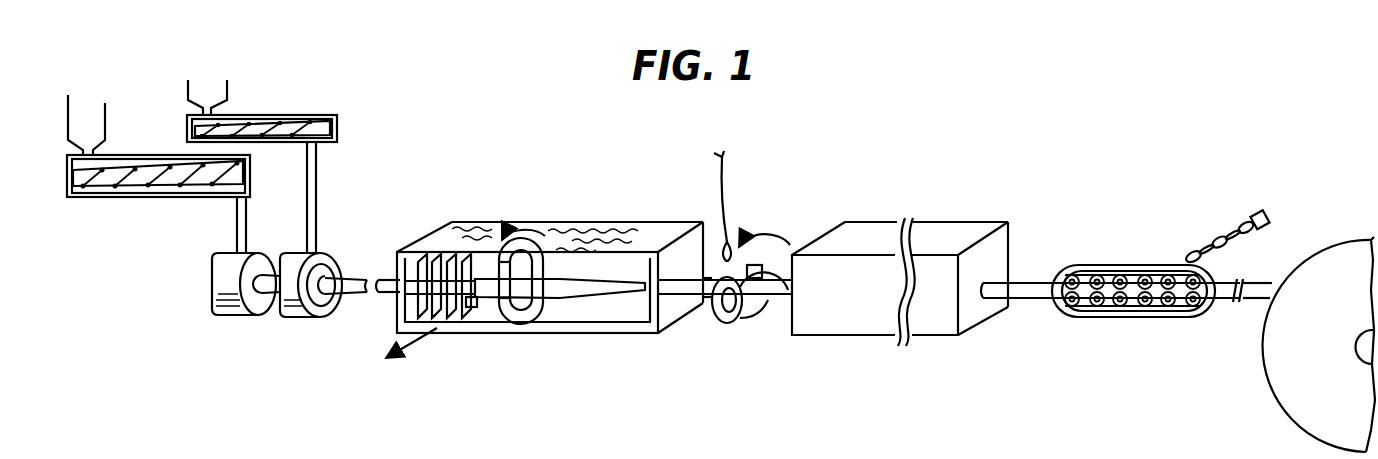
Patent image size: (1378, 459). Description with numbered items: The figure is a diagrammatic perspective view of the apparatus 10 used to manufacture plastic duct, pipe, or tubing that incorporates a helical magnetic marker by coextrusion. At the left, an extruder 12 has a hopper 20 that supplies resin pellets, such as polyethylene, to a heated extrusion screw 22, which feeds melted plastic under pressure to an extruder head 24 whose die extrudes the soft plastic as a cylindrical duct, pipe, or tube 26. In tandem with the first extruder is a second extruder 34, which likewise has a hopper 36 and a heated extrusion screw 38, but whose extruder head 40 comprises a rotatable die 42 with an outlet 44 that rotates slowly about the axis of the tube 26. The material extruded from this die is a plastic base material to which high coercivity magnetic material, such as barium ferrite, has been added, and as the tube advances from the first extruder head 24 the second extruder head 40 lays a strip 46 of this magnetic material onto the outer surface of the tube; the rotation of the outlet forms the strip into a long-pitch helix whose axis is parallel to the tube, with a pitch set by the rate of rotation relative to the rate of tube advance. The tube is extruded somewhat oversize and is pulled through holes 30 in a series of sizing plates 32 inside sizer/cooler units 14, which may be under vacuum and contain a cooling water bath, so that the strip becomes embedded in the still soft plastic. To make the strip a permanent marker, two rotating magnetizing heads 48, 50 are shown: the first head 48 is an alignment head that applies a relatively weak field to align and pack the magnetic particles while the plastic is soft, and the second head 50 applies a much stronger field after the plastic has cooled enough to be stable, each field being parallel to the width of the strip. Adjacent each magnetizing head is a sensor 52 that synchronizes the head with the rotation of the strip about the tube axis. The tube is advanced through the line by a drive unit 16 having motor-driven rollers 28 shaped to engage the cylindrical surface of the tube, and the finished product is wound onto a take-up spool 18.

The apparatus 10 is at (518, 407).
The extruder 12 is at (162, 205).
The sizer/cooler unit 14 is at (526, 216).
The drive unit 16 is at (1108, 261).
The take-up spool 18 is at (1309, 248).
The hopper 20 is at (68, 104).
The heated extrusion screw 22 is at (112, 178).
The extruder head 24 is at (211, 292).
The cylindrical duct, pipe, or tube 26 is at (266, 300).
The motor-driven rollers 28 is at (1118, 292).
The holes 30 is at (491, 256).
The sizing plates 32 is at (447, 253).
The second extruder 34 is at (348, 121).
The hopper 36 is at (228, 90).
The heated extrusion screw 38 is at (285, 129).
The extruder head 40 is at (293, 315).
The rotatable die 42 is at (316, 254).
The outlet 44 is at (326, 303).
The strip 46 is at (348, 302).
The first magnetizing head 48 is at (530, 322).
The second magnetizing head 50 is at (715, 324).
The sensor 52 is at (471, 311).